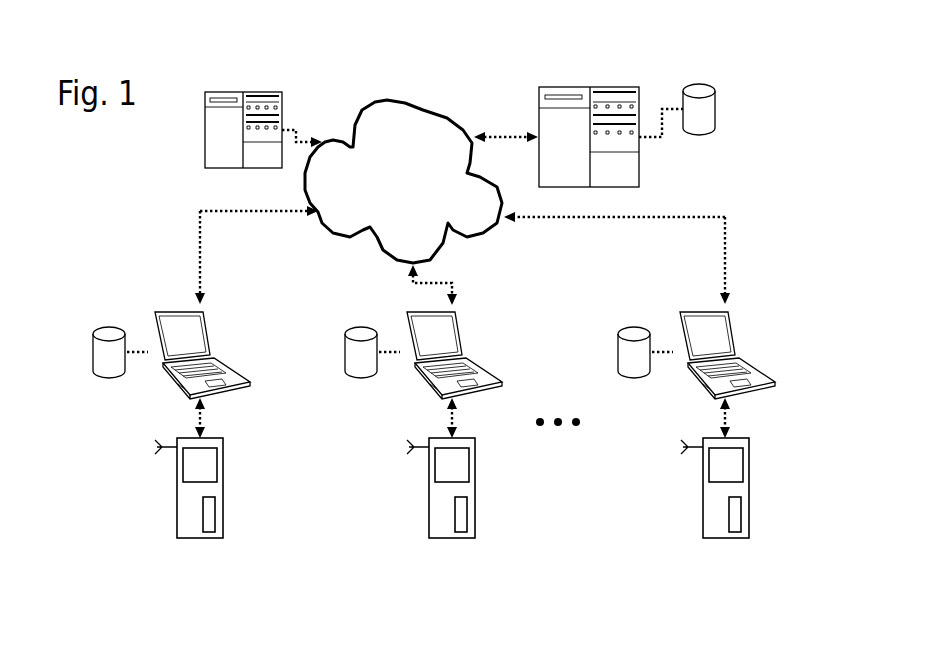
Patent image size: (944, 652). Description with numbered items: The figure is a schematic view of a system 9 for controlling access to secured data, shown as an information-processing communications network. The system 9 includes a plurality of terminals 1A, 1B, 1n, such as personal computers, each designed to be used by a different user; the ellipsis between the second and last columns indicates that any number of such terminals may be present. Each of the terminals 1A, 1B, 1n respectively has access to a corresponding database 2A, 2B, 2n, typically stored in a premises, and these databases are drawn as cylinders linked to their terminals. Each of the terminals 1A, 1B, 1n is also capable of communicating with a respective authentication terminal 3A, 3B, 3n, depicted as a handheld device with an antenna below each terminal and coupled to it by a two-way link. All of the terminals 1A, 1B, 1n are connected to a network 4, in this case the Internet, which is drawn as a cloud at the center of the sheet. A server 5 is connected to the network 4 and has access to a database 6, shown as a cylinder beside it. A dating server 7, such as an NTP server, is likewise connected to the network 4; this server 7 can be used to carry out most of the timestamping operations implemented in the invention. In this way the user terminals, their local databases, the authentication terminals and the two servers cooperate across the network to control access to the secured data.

The terminal 1A is at (212, 354).
The terminal 1B is at (464, 354).
The terminal 1n is at (737, 354).
The database 2A is at (109, 378).
The database 2B is at (361, 378).
The database 2n is at (634, 378).
The authentication terminal 3A is at (200, 538).
The authentication terminal 3B is at (452, 538).
The authentication terminal 3n is at (726, 538).
The network 4 is at (387, 100).
The server 5 is at (590, 87).
The database 6 is at (715, 107).
The dating server 7 is at (243, 92).
The system 9 is at (755, 192).